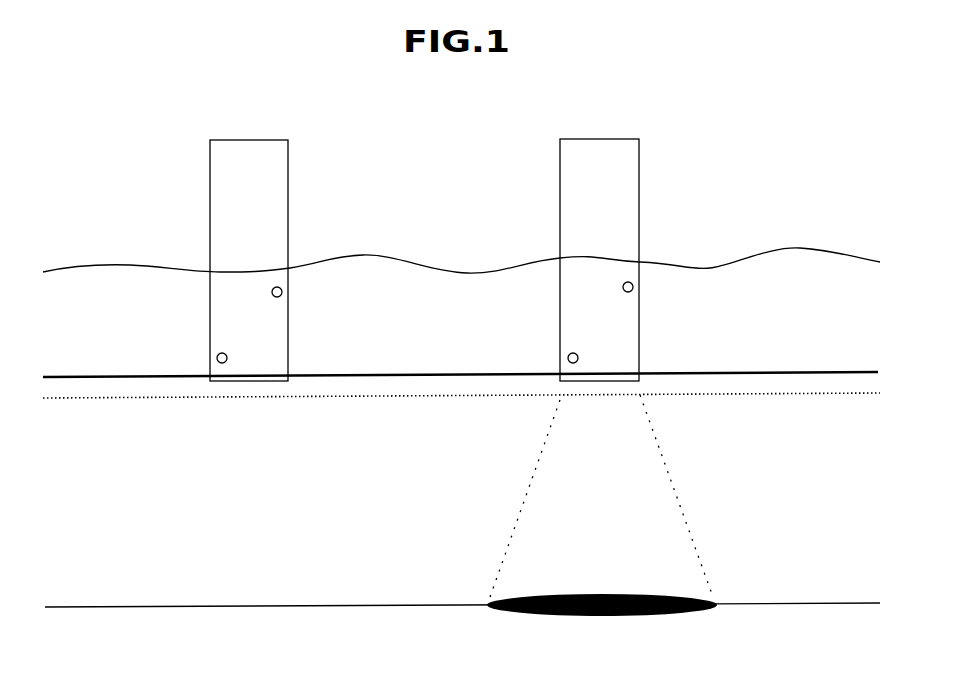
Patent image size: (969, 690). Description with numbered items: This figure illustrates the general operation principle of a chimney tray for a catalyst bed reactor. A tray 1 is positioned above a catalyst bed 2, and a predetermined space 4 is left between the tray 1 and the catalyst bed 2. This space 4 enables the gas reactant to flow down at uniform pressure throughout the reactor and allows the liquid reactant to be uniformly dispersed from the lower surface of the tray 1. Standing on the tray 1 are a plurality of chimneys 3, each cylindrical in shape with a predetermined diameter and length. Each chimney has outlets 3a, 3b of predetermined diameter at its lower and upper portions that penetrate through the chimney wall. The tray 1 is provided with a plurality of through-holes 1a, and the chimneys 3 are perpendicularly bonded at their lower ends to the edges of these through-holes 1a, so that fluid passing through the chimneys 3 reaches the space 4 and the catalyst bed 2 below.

The tray 1 is at (65, 375).
The through-holes 1a is at (584, 404).
The catalyst bed 2 is at (159, 628).
The chimneys 3 is at (548, 204).
The outlets 3a is at (209, 352).
The outlets 3b is at (294, 292).
The space 4 is at (648, 496).